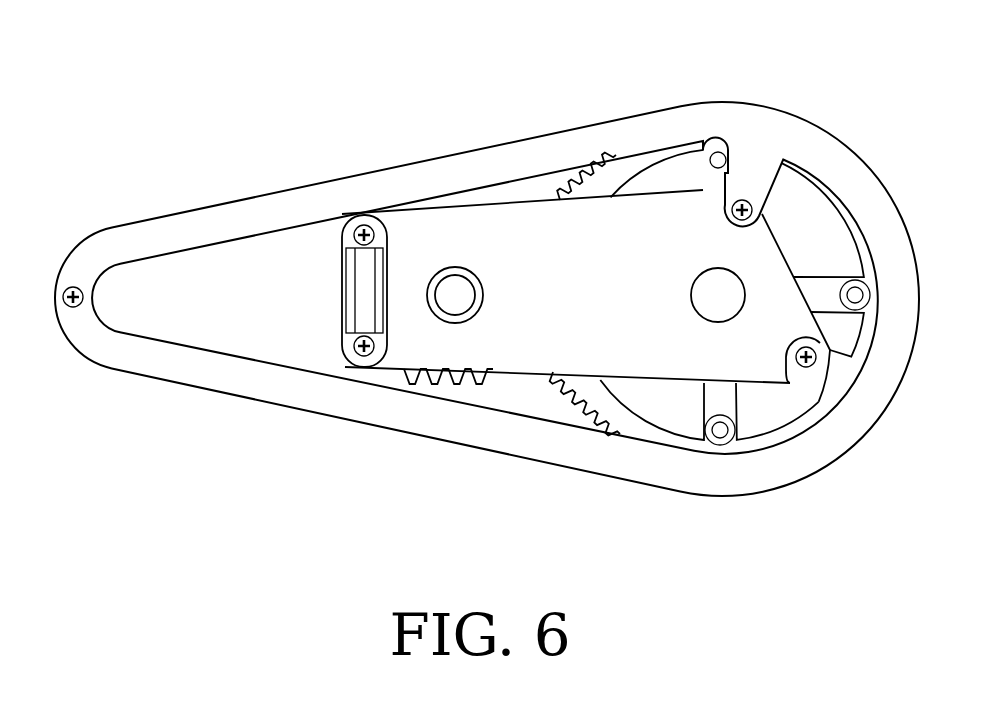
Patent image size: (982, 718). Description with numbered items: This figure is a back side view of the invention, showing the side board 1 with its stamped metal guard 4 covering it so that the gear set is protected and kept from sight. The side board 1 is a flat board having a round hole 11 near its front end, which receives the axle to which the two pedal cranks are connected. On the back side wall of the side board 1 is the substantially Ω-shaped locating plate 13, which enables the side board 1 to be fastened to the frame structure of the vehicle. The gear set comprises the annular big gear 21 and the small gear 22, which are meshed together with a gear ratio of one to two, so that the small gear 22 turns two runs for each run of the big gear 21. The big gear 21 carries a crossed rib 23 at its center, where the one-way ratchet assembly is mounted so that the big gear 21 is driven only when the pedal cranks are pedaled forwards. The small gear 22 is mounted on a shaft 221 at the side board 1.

The side board 1 is at (240, 283).
The guard 4 is at (398, 158).
The round hole 11 is at (718, 285).
The locating plate 13 is at (358, 286).
The big gear 21 is at (606, 173).
The small gear 22 is at (497, 376).
The shaft 221 is at (455, 298).
The crossed rib 23 is at (722, 398).